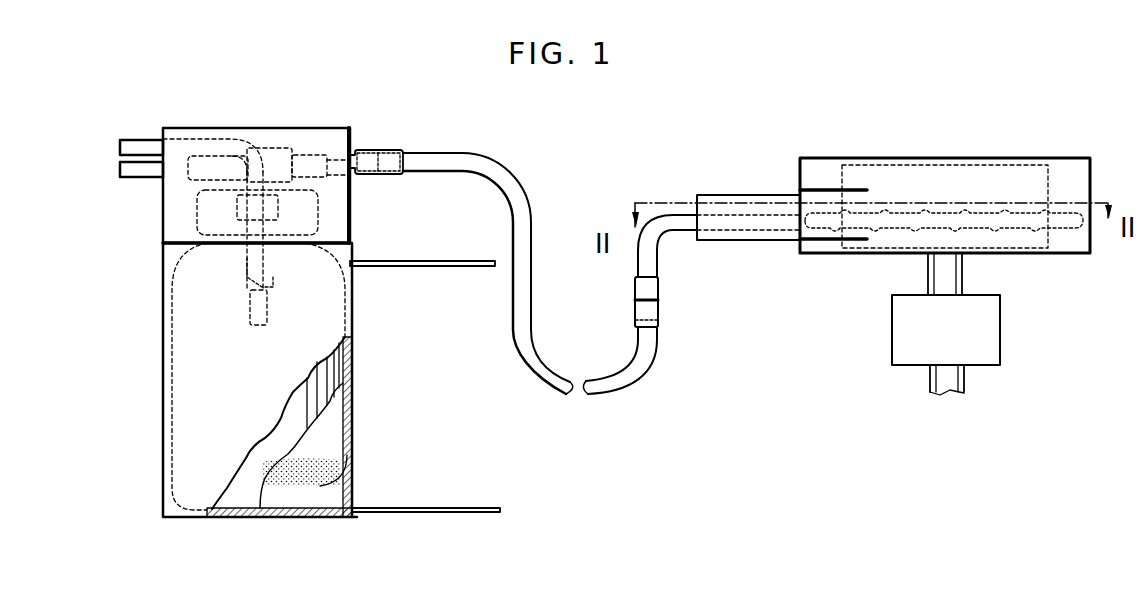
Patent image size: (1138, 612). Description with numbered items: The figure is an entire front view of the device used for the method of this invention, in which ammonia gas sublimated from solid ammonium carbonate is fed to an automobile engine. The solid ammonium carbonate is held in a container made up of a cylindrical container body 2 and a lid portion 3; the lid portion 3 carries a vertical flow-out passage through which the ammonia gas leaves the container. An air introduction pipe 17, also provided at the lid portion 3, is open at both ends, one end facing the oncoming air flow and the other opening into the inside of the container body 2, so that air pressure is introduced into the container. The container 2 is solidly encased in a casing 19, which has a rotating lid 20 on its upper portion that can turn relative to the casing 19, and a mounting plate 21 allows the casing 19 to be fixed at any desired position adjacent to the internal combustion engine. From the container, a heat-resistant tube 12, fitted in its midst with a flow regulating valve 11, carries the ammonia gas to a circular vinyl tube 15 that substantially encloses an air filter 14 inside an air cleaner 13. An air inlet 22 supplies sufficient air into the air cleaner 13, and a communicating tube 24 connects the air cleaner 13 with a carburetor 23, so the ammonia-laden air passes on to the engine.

The cylindrical container body 2 is at (347, 302).
The lid portion 3 is at (318, 213).
The flow regulating valve 11 is at (384, 138).
The heat-resistant tube 12 is at (470, 158).
The air cleaner 13 is at (823, 160).
The air filter 14 is at (969, 179).
The circular vinyl tube 15 is at (944, 170).
The air introduction pipe 17 is at (196, 203).
The casing 19 is at (306, 427).
The rotating lid 20 is at (256, 162).
The mounting plate 21 is at (425, 386).
The air inlet 22 is at (692, 201).
The carburetor 23 is at (969, 330).
The communicating tube 24 is at (907, 324).